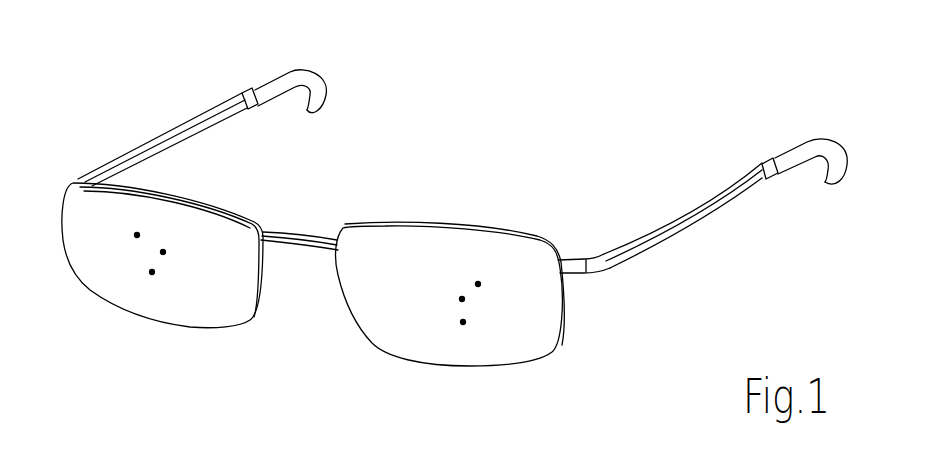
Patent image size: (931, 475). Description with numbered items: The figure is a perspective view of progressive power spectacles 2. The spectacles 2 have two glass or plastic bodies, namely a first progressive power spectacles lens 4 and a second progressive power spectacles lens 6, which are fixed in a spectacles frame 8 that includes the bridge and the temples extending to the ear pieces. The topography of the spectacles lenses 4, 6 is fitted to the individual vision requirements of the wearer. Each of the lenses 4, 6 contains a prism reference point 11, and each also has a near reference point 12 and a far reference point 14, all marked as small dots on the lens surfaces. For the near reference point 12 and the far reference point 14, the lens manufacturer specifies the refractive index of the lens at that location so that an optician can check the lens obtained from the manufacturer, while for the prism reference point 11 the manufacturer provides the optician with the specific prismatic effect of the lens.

The progressive power spectacles 2 is at (454, 217).
The first progressive power spectacles lens 4 is at (105, 277).
The second progressive power spectacles lens 6 is at (531, 340).
The spectacles frame 8 is at (582, 258).
The prism reference point 11 is at (163, 252).
The near reference point 12 is at (152, 272).
The far reference point 14 is at (137, 235).